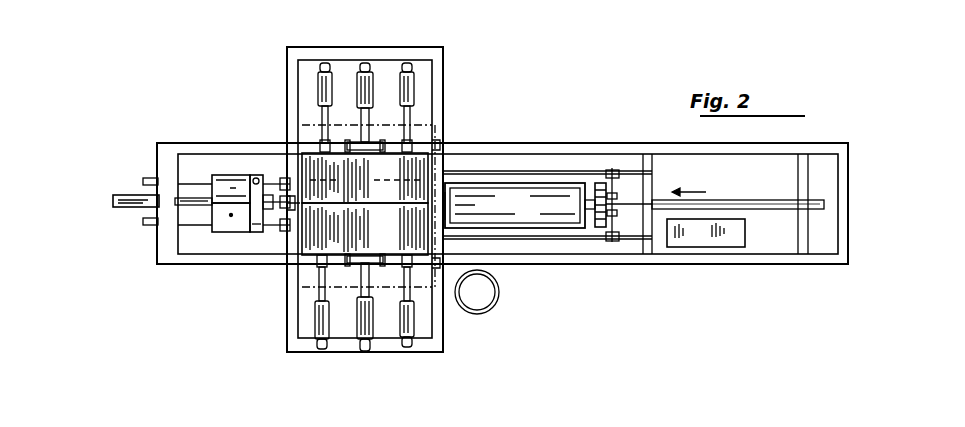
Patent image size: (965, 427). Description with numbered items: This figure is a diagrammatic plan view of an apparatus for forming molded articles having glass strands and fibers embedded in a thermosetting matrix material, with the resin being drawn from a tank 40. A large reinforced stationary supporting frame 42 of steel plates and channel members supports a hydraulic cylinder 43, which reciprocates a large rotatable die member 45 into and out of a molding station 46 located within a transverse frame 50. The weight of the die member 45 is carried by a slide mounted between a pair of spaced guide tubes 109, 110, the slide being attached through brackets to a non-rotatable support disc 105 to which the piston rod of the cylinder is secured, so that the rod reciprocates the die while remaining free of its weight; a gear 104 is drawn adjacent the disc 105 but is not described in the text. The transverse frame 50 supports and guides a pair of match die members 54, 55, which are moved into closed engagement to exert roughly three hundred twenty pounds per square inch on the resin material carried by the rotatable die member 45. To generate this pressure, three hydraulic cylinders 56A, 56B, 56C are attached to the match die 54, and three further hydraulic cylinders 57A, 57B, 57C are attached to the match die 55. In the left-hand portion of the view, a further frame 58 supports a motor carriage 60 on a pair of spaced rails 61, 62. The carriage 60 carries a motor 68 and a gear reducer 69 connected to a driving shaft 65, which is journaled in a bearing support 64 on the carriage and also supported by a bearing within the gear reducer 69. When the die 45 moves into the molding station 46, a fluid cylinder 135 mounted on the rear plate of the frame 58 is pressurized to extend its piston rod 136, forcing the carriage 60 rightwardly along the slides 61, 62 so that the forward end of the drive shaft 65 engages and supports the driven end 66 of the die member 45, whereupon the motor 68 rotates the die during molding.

The tank 40 is at (488, 300).
The stationary supporting frame 42 is at (850, 186).
The hydraulic cylinder 43 is at (724, 204).
The rotatable die member 45 is at (545, 213).
The molding station 46 is at (339, 196).
The transverse frame 50 is at (287, 73).
The match die member 54 is at (353, 181).
The match die member 55 is at (353, 241).
The hydraulic cylinder 56A is at (330, 85).
The hydraulic cylinder 56B is at (372, 88).
The hydraulic cylinder 56C is at (416, 90).
The hydraulic cylinder 57A is at (322, 315).
The hydraulic cylinder 57B is at (372, 315).
The hydraulic cylinder 57C is at (412, 330).
The further frame 58 is at (172, 143).
The motor carriage 60 is at (233, 220).
The rail 61 is at (192, 180).
The rail 62 is at (200, 224).
The bearing support 64 is at (256, 232).
The driving shaft 65 is at (272, 195).
The driven end 66 is at (447, 183).
The motor 68 is at (232, 188).
The gear reducer 69 is at (226, 215).
The gear 104 is at (598, 183).
The support disc 105 is at (601, 228).
The guide tube 109 is at (538, 238).
The guide tube 110 is at (520, 174).
The fluid cylinder 135 is at (122, 197).
The piston rod 136 is at (205, 205).